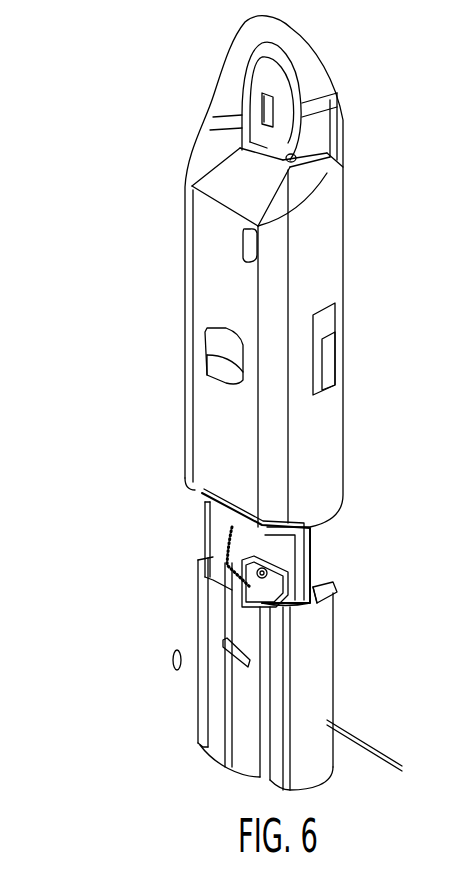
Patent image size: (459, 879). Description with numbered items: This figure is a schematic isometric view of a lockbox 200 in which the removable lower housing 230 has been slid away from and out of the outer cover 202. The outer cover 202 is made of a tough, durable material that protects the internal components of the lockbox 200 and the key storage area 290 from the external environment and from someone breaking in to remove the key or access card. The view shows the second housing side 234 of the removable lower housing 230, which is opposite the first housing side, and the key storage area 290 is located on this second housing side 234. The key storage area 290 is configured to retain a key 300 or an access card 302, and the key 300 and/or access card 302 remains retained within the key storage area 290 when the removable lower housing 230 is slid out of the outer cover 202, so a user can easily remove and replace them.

The lockbox 200 is at (64, 109).
The outer cover 202 is at (205, 405).
The removable lower housing 230 is at (222, 740).
The second housing side 234 is at (308, 530).
The key storage area 290 is at (315, 593).
The key 300 is at (240, 568).
The access card 302 is at (218, 540).